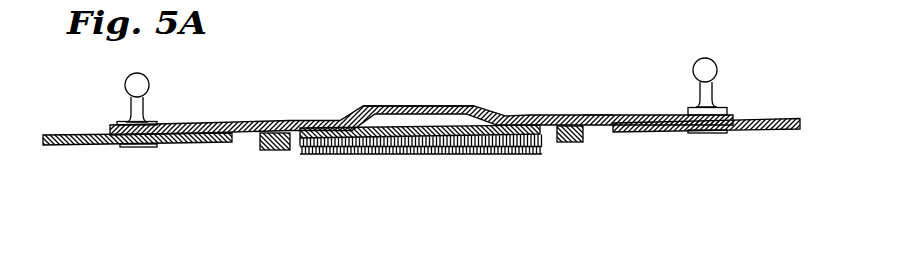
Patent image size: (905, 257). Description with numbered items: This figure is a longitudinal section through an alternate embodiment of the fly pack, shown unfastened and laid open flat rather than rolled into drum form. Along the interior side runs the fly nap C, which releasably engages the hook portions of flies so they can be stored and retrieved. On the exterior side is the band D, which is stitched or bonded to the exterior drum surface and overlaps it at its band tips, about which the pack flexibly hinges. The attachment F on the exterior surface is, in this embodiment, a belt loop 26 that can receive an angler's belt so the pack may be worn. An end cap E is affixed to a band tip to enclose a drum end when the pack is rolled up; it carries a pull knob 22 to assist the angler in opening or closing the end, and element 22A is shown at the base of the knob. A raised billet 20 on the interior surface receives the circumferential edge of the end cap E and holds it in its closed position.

The raised billet 20 is at (275, 150).
The pull knob 22 is at (717, 70).
The knob bottom plate 22A is at (707, 133).
The belt loop 26 is at (440, 110).
The fly nap C is at (407, 155).
The band D is at (598, 115).
The end cap E is at (775, 130).
The attachment F is at (397, 106).